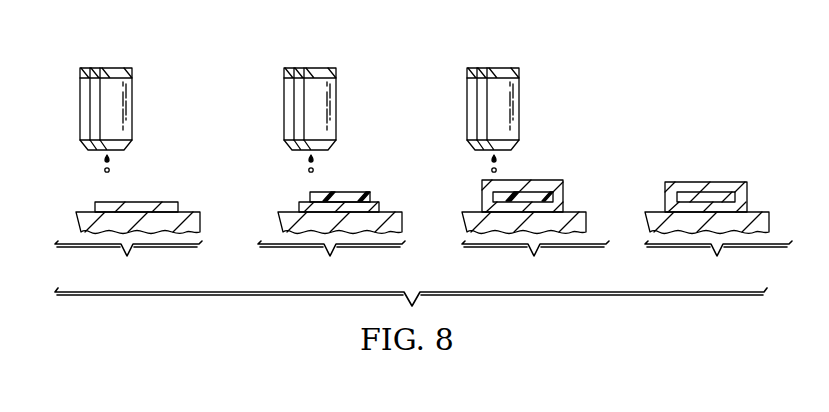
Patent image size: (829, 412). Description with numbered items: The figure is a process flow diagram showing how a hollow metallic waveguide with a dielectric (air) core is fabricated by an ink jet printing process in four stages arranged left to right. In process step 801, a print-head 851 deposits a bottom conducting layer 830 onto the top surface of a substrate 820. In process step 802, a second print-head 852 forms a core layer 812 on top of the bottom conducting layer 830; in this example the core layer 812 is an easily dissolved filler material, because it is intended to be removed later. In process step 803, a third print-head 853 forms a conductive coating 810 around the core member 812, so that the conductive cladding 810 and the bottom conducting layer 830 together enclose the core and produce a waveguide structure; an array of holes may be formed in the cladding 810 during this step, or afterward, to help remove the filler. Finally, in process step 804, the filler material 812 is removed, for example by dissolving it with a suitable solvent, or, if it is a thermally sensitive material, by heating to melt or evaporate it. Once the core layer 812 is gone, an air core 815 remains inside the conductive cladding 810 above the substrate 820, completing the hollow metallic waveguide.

The print-head 851 is at (92, 64).
The print-head 852 is at (296, 64).
The print-head 853 is at (503, 64).
The substrate 820 is at (83, 209).
The bottom conducting layer 830 is at (140, 202).
The core layer 812 is at (350, 192).
The conductive coating 810 is at (484, 197).
The air core 815 is at (706, 196).
The process step 801 is at (128, 220).
The process step 802 is at (414, 209).
The process step 803 is at (512, 231).
The process step 804 is at (718, 210).